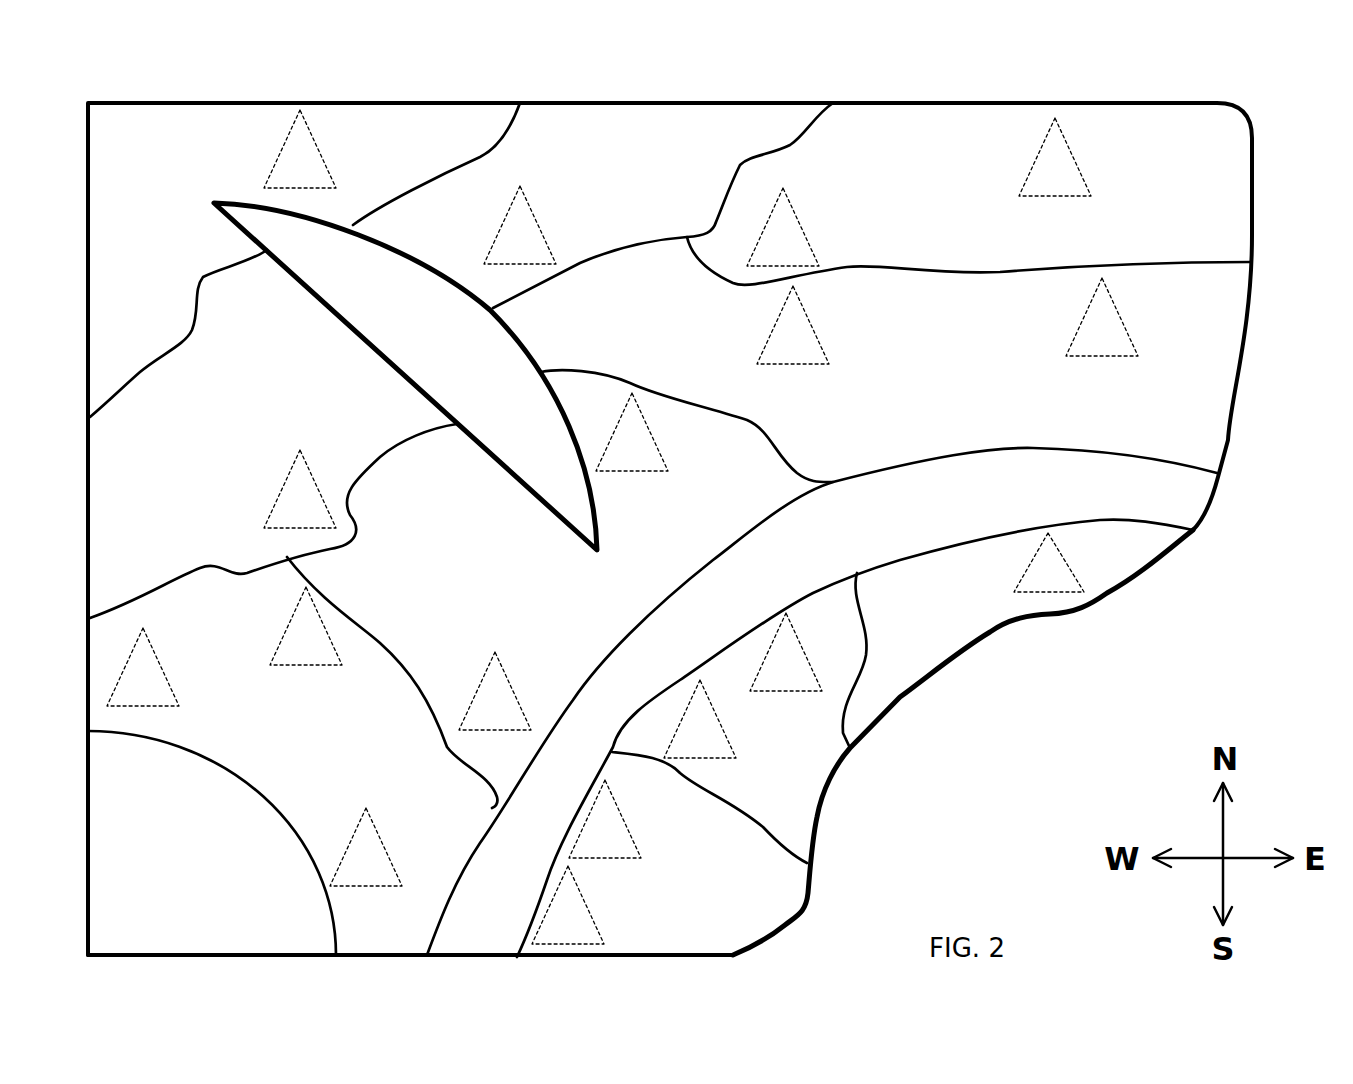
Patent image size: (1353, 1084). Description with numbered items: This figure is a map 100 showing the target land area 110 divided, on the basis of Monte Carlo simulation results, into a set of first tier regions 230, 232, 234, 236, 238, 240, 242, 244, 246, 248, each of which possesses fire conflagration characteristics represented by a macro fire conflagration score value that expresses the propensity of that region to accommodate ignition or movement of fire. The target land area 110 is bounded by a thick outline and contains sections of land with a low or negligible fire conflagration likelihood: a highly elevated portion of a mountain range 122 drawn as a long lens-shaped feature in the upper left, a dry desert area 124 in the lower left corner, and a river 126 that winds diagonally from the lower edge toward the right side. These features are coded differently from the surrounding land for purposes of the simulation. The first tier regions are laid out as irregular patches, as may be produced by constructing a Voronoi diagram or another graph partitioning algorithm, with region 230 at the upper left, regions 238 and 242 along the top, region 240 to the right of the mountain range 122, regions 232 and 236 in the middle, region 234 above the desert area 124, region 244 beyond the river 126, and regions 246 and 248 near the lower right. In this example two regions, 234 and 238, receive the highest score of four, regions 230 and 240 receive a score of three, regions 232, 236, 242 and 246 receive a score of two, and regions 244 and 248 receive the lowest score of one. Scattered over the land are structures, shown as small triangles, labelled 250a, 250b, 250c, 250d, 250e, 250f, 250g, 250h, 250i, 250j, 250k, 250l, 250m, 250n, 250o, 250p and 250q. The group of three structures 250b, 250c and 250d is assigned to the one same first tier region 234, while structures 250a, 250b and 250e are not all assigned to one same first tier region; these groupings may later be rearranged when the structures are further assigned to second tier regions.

The map of geographic area 100 is at (78, 67).
The target land area 110 is at (1088, 619).
The mountain range 122 is at (425, 358).
The dry desert area 124 is at (181, 882).
The river 126 is at (838, 541).
The first tier region 230 is at (148, 168).
The first tier region 232 is at (235, 393).
The first tier region 234 is at (294, 730).
The first tier region 236 is at (481, 603).
The first tier region 238 is at (568, 201).
The first tier region 240 is at (858, 388).
The first tier region 242 is at (935, 203).
The first tier region 244 is at (933, 608).
The first tier region 246 is at (761, 733).
The first tier region 248 is at (630, 897).
The structure 250a is at (277, 513).
The structure 250b is at (283, 650).
The structure 250c is at (343, 871).
The structure 250d is at (120, 691).
The structure 250e is at (472, 715).
The structure 250f is at (611, 456).
The structure 250g is at (497, 249).
The structure 250h is at (1032, 181).
The structure 250i is at (763, 251).
The structure 250j is at (1082, 341).
The structure 250k is at (770, 349).
The structure 250l is at (1029, 584).
The structure 250m is at (761, 676).
The structure 250n is at (677, 743).
The structure 250o is at (582, 843).
The structure 250p is at (545, 929).
The structure 250q is at (277, 173).